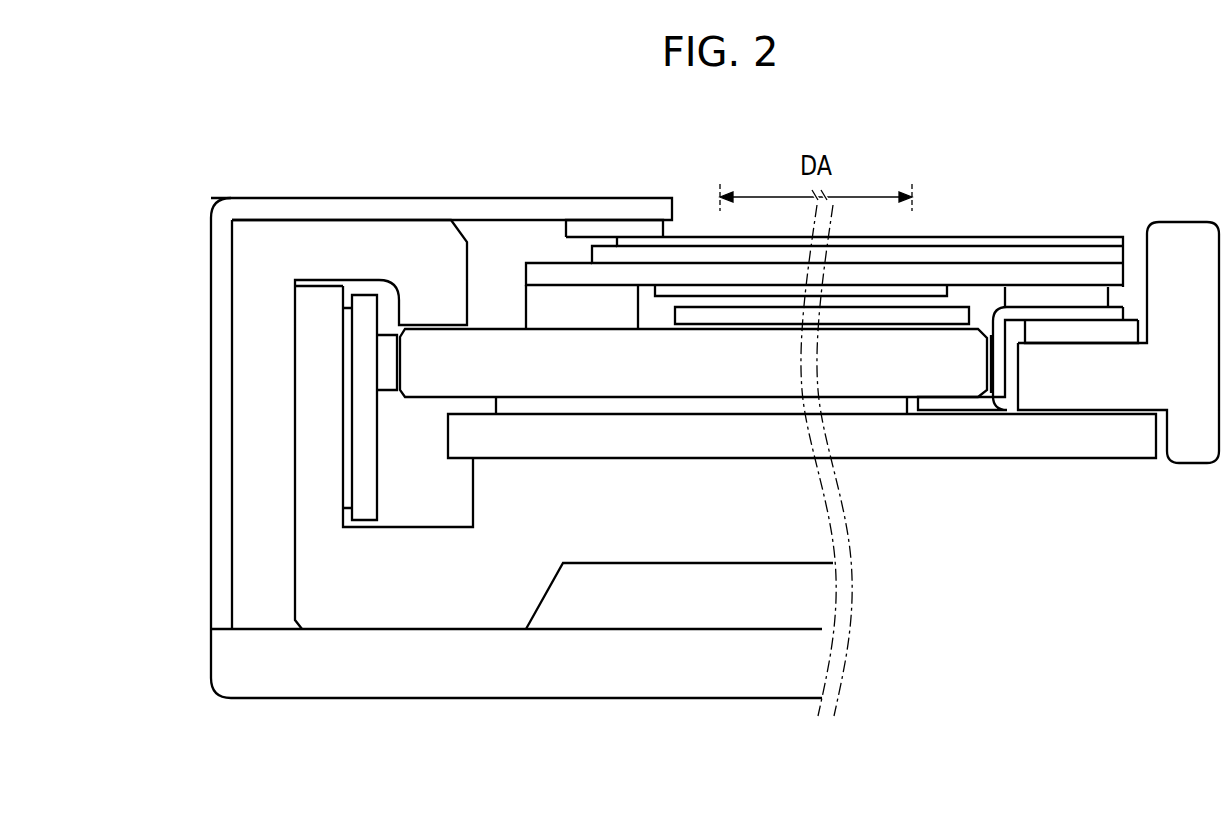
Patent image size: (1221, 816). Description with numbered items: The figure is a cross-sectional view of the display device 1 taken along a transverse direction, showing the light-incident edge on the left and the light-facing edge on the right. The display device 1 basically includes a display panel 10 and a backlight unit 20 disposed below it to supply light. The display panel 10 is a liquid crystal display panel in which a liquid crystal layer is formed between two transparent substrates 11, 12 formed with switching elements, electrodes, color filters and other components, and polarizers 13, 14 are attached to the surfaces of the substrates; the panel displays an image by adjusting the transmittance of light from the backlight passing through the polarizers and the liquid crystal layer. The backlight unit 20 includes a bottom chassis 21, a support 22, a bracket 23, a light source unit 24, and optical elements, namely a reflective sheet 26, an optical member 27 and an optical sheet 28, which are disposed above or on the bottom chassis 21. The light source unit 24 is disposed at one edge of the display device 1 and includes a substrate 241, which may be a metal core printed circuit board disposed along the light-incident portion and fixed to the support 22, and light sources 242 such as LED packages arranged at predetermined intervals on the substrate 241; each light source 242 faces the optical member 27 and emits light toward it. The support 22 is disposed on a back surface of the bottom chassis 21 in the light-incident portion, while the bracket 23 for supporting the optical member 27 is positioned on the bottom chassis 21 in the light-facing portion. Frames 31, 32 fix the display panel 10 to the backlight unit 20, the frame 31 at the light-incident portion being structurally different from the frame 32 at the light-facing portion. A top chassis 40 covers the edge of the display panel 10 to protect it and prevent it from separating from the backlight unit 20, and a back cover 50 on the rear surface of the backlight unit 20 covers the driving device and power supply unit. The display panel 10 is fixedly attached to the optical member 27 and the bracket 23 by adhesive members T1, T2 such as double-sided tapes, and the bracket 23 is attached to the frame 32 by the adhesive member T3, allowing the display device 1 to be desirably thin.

The display device 1 is at (733, 121).
The display panel 10 is at (1068, 712).
The transparent substrate 11 is at (603, 256).
The transparent substrate 12 is at (638, 277).
The polarizer 13 is at (684, 237).
The polarizer 14 is at (710, 291).
The backlight unit 20 is at (1151, 750).
The bottom chassis 21 is at (922, 440).
The support 22 is at (510, 565).
The bracket 23 is at (963, 403).
The light source unit 24 is at (345, 748).
The substrate 241 is at (372, 510).
The light source 242 is at (386, 392).
The reflective sheet 26 is at (708, 407).
The optical member 27 is at (945, 362).
The optical sheet 28 is at (928, 316).
The frame 31 is at (345, 248).
The frame 32 is at (1178, 240).
The top chassis 40 is at (436, 207).
The back cover 50 is at (610, 667).
The adhesive member T1 is at (552, 303).
The adhesive member T2 is at (1050, 300).
The adhesive member T3 is at (1090, 332).